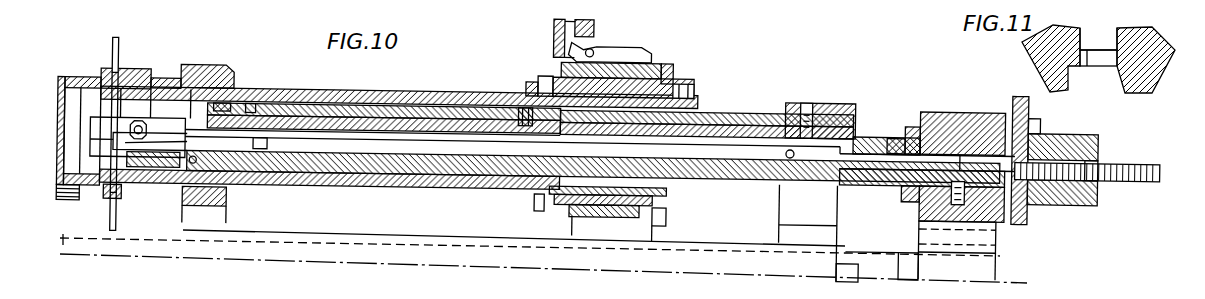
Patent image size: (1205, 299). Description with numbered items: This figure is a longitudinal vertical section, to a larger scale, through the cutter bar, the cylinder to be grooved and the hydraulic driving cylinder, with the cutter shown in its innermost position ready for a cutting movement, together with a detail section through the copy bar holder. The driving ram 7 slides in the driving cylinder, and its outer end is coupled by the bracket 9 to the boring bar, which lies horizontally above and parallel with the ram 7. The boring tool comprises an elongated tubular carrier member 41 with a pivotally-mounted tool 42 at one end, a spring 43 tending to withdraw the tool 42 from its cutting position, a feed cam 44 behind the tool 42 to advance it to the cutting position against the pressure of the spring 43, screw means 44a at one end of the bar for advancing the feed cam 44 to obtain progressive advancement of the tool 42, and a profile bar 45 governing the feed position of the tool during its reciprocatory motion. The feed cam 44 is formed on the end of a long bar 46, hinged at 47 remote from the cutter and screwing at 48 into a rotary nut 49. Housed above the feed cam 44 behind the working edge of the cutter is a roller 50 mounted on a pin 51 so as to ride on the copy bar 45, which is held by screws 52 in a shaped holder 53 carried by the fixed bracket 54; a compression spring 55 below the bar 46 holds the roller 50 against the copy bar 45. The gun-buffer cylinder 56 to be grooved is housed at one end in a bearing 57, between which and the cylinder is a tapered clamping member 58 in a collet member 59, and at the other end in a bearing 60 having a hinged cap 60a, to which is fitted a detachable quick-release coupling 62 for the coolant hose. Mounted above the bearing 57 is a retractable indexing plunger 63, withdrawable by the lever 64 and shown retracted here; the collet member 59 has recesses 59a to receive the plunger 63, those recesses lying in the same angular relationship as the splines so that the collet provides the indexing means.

In FIG. 10, the driving ram 7 is at (877, 261).
In FIG. 10, the bracket 9 is at (928, 223).
In FIG. 10, the tubular carrier member 41 is at (703, 166).
In FIG. 10, the pivotally-mounted tool 42 is at (165, 164).
In FIG. 10, the spring 43 is at (217, 200).
In FIG. 10, the feed cam 44 is at (113, 171).
In FIG. 10, the screw means 44a is at (1097, 174).
In FIG. 10, the profile bar 45 is at (427, 126).
In FIG. 10, the long bar 46 is at (488, 152).
In FIG. 10, the hinge 47 is at (787, 148).
In FIG. 10, the screw connection 48 is at (983, 161).
In FIG. 10, the rotary nut 49 is at (1093, 152).
In FIG. 10, the roller 50 is at (143, 130).
In FIG. 10, the pin 51 is at (143, 135).
In FIG. 10, the screws 52 is at (522, 111).
In FIG. 10, the shaped holder 53 is at (733, 115).
In FIG. 11, the shaped holder 53 is at (1048, 62).
In FIG. 10, the fixed bracket 54 is at (807, 109).
In FIG. 10, the compression spring 55 is at (303, 111).
In FIG. 10, the gun-buffer cylinder 56 is at (305, 109).
In FIG. 10, the bearing 57 is at (666, 78).
In FIG. 10, the tapered clamping member 58 is at (563, 78).
In FIG. 10, the collet member 59 is at (688, 92).
In FIG. 10, the recesses 59a is at (590, 38).
In FIG. 10, the bearing 60 is at (178, 178).
In FIG. 10, the hinged cap 60a is at (230, 74).
In FIG. 10, the quick-release coupling 62 is at (108, 80).
In FIG. 10, the indexing plunger 63 is at (553, 47).
In FIG. 10, the lever 64 is at (610, 56).